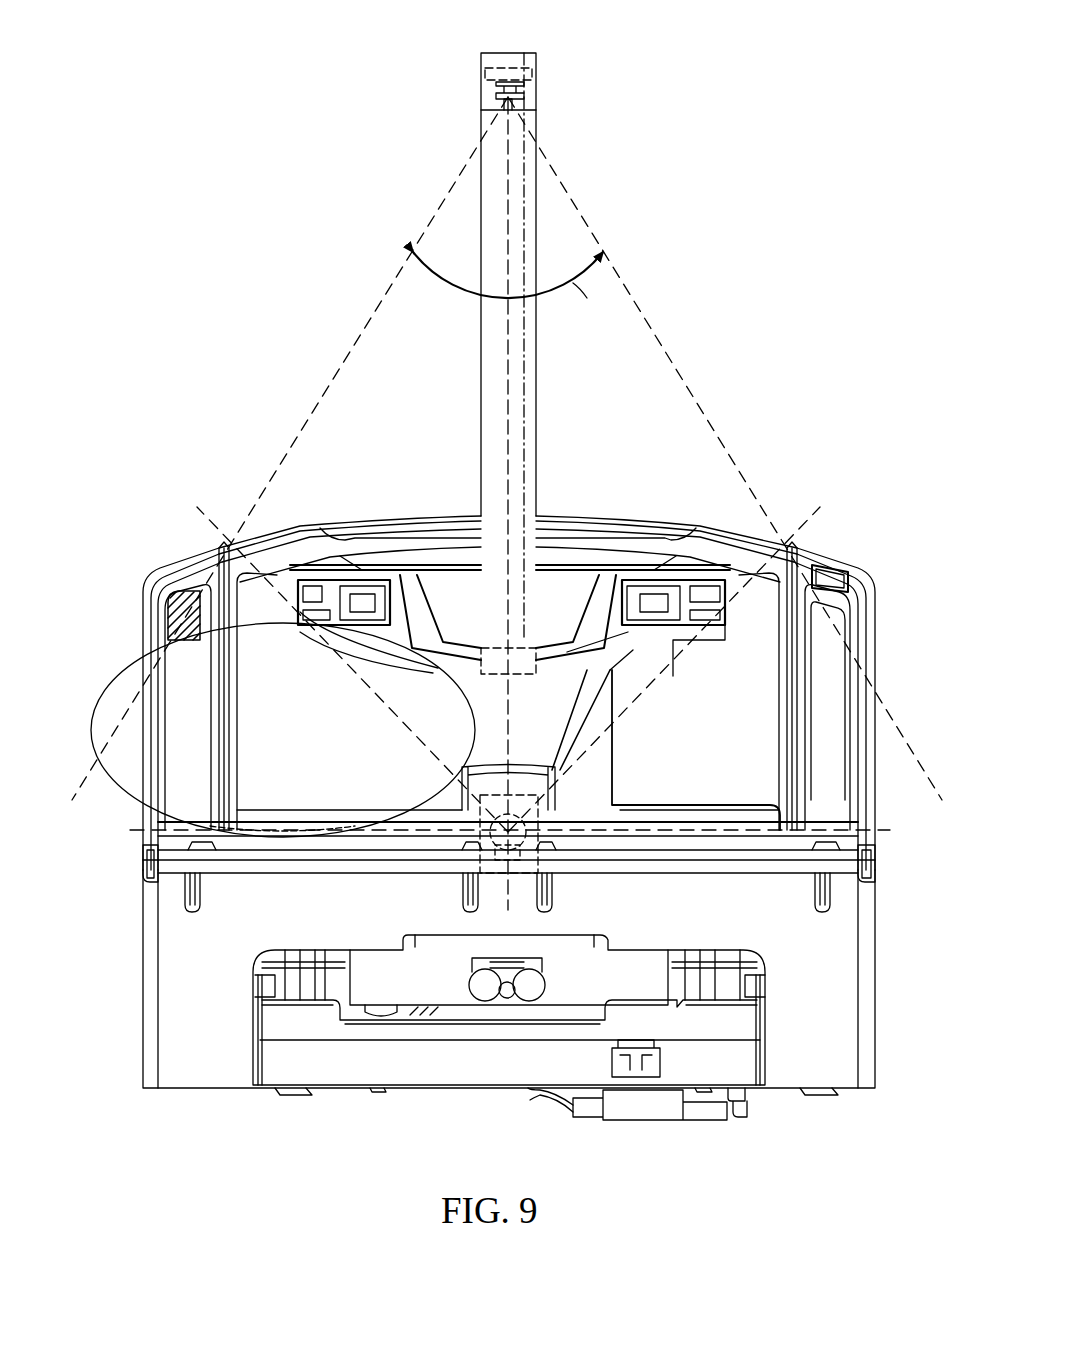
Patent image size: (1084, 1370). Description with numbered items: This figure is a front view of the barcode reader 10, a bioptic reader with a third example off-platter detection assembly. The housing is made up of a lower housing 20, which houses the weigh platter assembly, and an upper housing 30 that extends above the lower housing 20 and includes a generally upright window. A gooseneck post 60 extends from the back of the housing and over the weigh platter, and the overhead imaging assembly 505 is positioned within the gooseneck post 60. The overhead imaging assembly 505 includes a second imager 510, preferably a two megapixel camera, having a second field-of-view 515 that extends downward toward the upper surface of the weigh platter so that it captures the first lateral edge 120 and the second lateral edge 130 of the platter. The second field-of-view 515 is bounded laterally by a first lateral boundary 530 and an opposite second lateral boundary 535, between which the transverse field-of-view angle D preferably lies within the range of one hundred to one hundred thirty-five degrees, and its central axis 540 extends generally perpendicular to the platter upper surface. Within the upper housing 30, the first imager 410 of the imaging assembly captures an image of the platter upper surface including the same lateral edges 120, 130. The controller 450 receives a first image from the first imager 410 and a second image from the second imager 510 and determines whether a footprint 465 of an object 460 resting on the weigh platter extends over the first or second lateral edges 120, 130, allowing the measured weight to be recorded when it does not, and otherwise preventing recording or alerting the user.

The barcode reader 10 is at (272, 52).
The lower housing 20 is at (142, 1003).
The upper housing 30 is at (165, 552).
The gooseneck post 60 is at (462, 94).
The first lateral edge 120 is at (878, 860).
The second lateral edge 130 is at (148, 862).
The first imager 410 is at (520, 842).
The controller 450 is at (525, 678).
The object 460 is at (118, 680).
The footprint 465 is at (285, 822).
The overhead imaging assembly 505 is at (462, 64).
The second imager 510 is at (522, 84).
The second field-of-view 515 is at (393, 362).
The first lateral boundary 530 is at (726, 440).
The second lateral boundary 535 is at (298, 428).
The central axis 540 is at (500, 412).